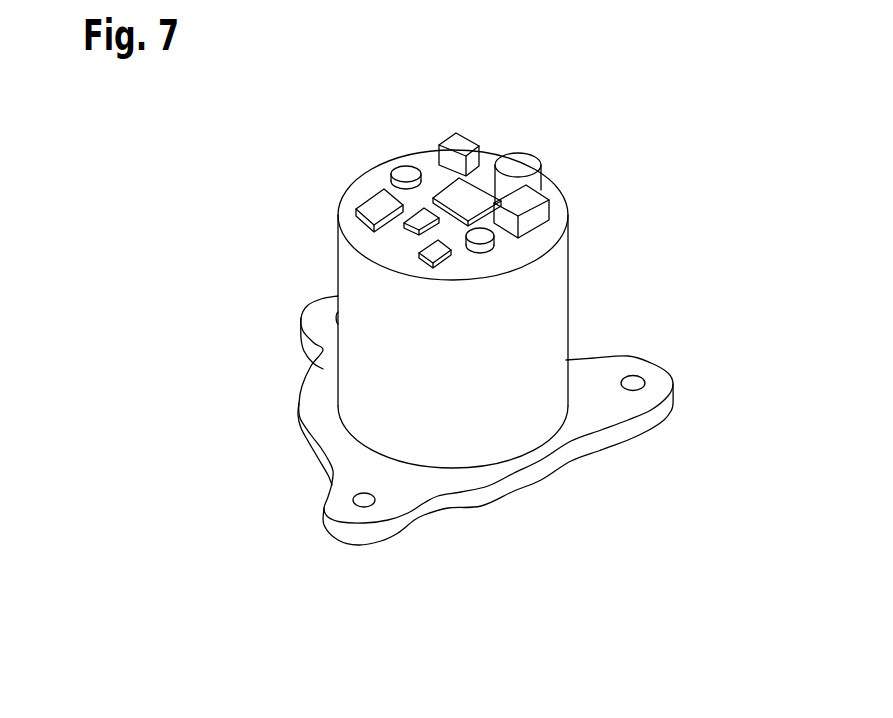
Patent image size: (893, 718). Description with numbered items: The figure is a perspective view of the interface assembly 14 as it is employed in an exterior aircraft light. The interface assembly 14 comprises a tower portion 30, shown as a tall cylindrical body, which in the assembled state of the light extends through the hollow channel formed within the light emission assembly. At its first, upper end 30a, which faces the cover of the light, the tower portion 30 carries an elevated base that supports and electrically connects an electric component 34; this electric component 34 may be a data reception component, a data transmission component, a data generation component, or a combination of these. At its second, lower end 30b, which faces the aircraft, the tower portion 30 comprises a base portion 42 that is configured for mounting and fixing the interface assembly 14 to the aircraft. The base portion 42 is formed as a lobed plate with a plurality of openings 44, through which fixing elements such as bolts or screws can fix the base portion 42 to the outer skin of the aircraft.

The interface assembly 14 is at (652, 95).
The tower portion 30 is at (582, 240).
The first (upper) end 30a is at (567, 187).
The second (lower) end 30b is at (575, 357).
The electric component 34 is at (485, 126).
The base portion 42 is at (660, 355).
The openings 44 is at (642, 378).